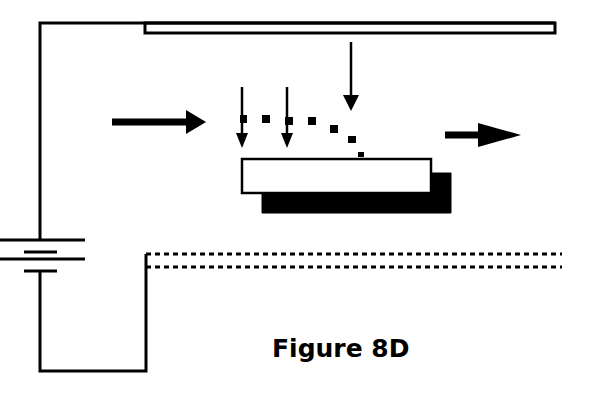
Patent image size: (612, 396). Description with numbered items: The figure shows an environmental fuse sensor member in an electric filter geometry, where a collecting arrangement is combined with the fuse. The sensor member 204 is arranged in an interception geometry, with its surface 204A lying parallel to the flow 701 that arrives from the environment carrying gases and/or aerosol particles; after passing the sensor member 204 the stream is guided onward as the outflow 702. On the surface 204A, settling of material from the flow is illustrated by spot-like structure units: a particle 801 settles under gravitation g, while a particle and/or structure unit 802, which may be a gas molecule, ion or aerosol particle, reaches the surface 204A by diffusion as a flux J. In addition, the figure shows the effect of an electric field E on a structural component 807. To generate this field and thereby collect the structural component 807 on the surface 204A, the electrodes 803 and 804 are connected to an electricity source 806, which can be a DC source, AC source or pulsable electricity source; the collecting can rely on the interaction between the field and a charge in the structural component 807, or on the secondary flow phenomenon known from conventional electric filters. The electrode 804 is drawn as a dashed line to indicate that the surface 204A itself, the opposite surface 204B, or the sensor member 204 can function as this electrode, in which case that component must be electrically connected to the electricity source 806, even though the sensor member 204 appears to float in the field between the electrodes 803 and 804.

The electrode 803 is at (145, 33).
The electricity source 806 is at (62, 240).
The electrode 804 is at (270, 268).
The flow 701 is at (140, 138).
The flow 702 is at (493, 147).
The sensor member 204 is at (322, 161).
The surface 204A is at (415, 158).
The surface 204B is at (260, 198).
The particle 801 is at (242, 106).
The particle and/or structure unit 802 is at (287, 107).
The structural component 807 is at (353, 135).